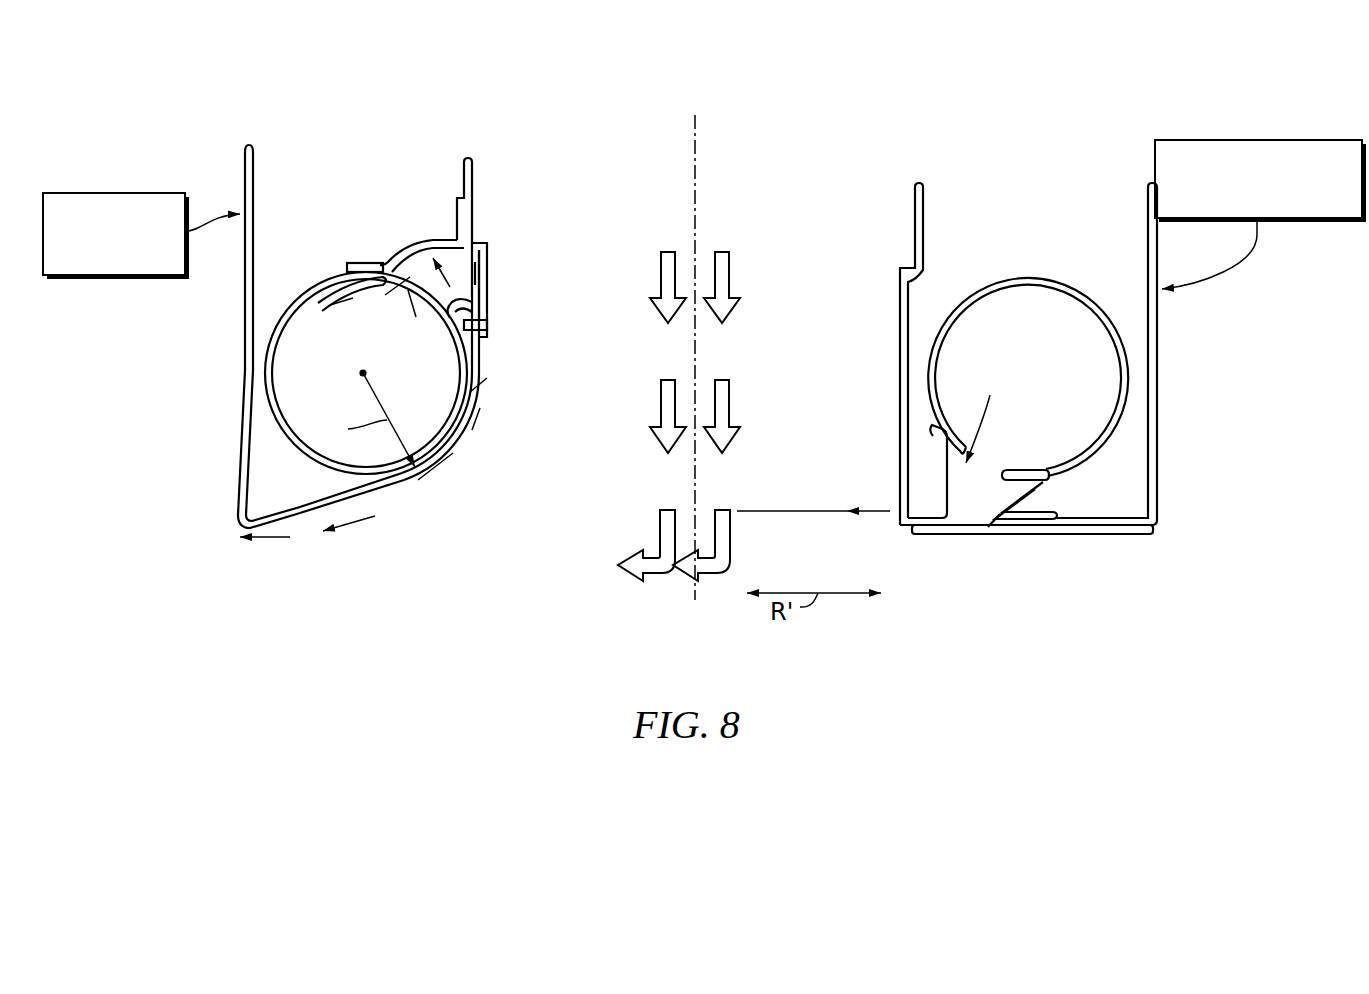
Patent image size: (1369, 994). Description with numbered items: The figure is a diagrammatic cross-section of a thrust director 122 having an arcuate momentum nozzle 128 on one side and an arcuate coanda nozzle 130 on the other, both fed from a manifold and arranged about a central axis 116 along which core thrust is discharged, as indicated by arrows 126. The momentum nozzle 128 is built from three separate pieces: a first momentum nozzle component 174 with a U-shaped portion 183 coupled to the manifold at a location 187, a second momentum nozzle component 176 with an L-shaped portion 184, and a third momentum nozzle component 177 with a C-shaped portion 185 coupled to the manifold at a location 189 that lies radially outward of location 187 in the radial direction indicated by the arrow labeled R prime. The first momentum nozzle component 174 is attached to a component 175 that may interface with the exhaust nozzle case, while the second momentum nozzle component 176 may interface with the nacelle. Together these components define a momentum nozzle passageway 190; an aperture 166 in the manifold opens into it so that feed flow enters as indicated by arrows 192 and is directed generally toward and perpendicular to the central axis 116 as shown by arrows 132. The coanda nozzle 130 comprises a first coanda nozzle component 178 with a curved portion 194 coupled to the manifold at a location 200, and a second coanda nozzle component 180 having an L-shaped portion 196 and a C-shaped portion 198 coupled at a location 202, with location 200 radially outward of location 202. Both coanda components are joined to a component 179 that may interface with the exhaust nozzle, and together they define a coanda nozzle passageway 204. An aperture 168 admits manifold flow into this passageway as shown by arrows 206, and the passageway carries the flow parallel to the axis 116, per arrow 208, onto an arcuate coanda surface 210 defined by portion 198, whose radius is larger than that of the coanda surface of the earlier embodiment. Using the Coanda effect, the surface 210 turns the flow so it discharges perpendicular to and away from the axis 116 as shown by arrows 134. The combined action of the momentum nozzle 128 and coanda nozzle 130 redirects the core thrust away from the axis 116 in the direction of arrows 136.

The central axis 116 is at (697, 145).
The thrust director 122 is at (874, 175).
The arrows indicating core thrust 126 is at (733, 408).
The arcuate momentum nozzle 128 is at (1300, 140).
The arcuate coanda nozzle 130 is at (115, 193).
The arrows indicating momentum nozzle flow 132 is at (878, 514).
The arrows indicating coanda nozzle discharge 134 is at (290, 537).
The arrows indicating redirected core thrust 136 is at (707, 575).
The aperture 166 is at (1003, 460).
The aperture 168 is at (410, 290).
The first momentum nozzle component 174 is at (905, 465).
The component 175 is at (903, 300).
The second momentum nozzle component 176 is at (1080, 535).
The third momentum nozzle component 177 is at (1049, 505).
The first coanda nozzle component 178 is at (402, 243).
The component 179 is at (490, 254).
The second coanda nozzle component 180 is at (240, 512).
The portion 183 is at (905, 427).
The portion 184 is at (1160, 505).
The portion 185 is at (990, 530).
The location 187 is at (928, 425).
The location 189 is at (1043, 462).
The momentum nozzle passageway 190 is at (924, 536).
The arrows indicating flow through aperture 192 is at (967, 425).
The curved portion 194 is at (424, 231).
The portion 196 is at (240, 488).
The portion 198 is at (396, 497).
The location 200 is at (362, 263).
The location 202 is at (472, 395).
The coanda nozzle passageway 204 is at (447, 316).
The arrows indicating flow through aperture 206 is at (322, 299).
The arrow indicating passageway flow 208 is at (478, 273).
The arcuate coanda surface 210 is at (457, 435).